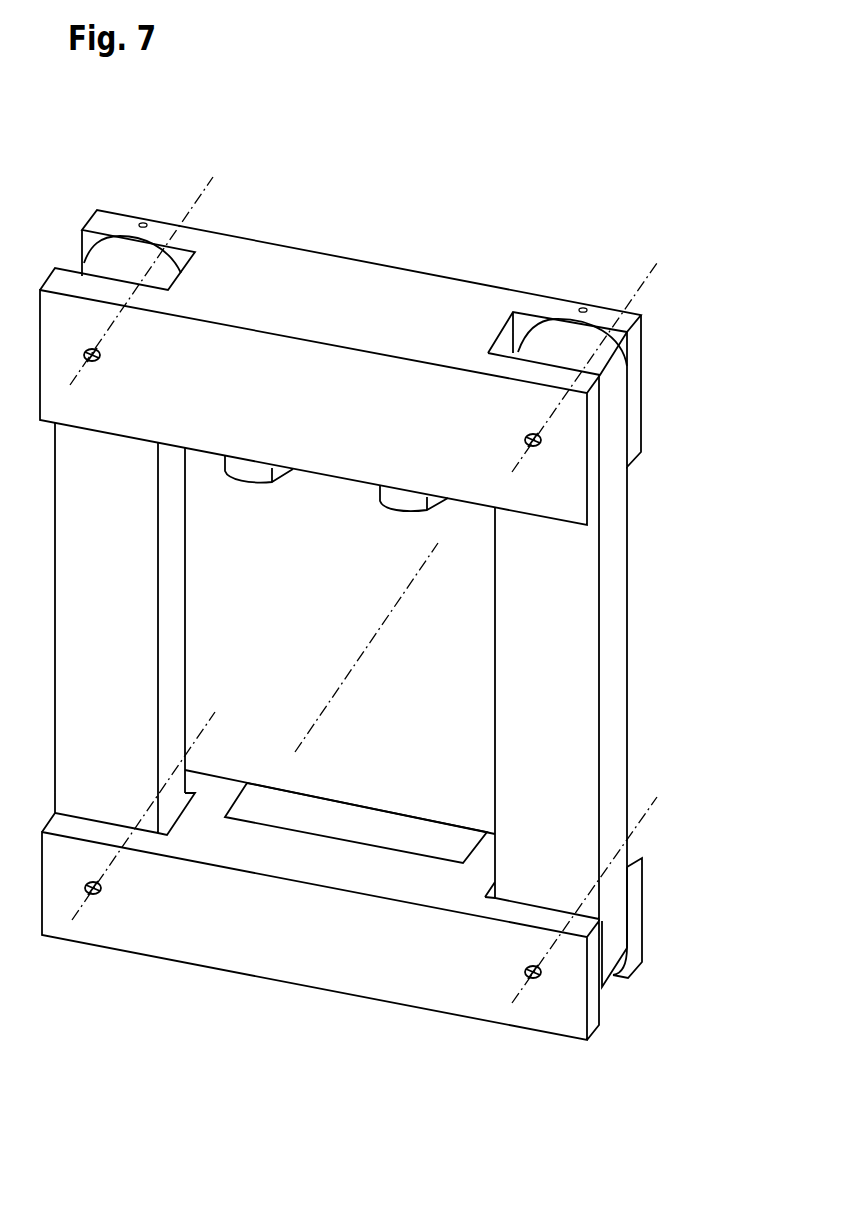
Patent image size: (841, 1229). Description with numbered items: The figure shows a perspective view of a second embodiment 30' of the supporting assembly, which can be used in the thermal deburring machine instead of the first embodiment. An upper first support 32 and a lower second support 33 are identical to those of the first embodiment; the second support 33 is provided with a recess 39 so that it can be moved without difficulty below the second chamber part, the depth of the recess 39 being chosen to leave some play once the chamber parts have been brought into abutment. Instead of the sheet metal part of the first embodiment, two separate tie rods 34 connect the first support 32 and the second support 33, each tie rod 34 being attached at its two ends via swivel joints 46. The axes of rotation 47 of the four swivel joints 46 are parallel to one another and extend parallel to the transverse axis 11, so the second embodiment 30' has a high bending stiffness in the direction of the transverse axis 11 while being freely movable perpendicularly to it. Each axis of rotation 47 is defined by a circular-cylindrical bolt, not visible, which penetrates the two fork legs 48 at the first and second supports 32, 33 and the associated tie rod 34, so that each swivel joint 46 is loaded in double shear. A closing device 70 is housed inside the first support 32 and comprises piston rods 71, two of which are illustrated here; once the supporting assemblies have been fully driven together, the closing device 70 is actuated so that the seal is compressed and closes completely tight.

The second embodiment of the supporting assembly 30' is at (374, 617).
The first support 32 is at (352, 280).
The second support 33 is at (272, 958).
The tie rod 34 is at (133, 618).
The recess 39 is at (423, 836).
The swivel joint 46 is at (101, 357).
The axis of rotation 47 is at (210, 188).
The fork leg 48 is at (632, 378).
The transverse axis 11 is at (330, 702).
The closing device 70 is at (336, 518).
The piston rod 71 is at (255, 472).